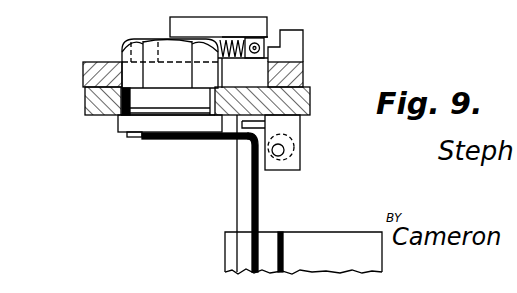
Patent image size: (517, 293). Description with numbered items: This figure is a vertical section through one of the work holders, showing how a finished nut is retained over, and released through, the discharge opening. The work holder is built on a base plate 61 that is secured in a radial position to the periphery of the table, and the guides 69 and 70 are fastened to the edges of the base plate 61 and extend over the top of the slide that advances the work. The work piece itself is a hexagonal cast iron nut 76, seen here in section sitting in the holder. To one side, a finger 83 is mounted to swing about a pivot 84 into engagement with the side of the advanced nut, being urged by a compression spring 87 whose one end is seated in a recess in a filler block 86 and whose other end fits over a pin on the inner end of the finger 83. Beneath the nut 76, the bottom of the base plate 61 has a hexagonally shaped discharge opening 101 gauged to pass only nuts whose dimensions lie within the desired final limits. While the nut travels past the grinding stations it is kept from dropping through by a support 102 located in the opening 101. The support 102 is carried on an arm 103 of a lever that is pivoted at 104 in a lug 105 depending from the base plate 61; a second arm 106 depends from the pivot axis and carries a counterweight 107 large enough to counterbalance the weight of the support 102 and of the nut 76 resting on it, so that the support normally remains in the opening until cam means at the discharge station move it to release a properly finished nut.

The base plate 61 is at (103, 100).
The guide 69 is at (97, 75).
The guide 70 is at (294, 80).
The hexagonal cast iron nut 76 is at (128, 50).
The finger 83 is at (265, 37).
The pivot 84 is at (287, 31).
The filler block 86 is at (228, 29).
The compression spring 87 is at (238, 36).
The discharge opening 101 is at (109, 116).
The support 102 is at (155, 97).
The arm 103 is at (160, 139).
The pivot 104 is at (282, 150).
The lug 105 is at (270, 126).
The arm 106 is at (247, 203).
The counterweight 107 is at (298, 245).